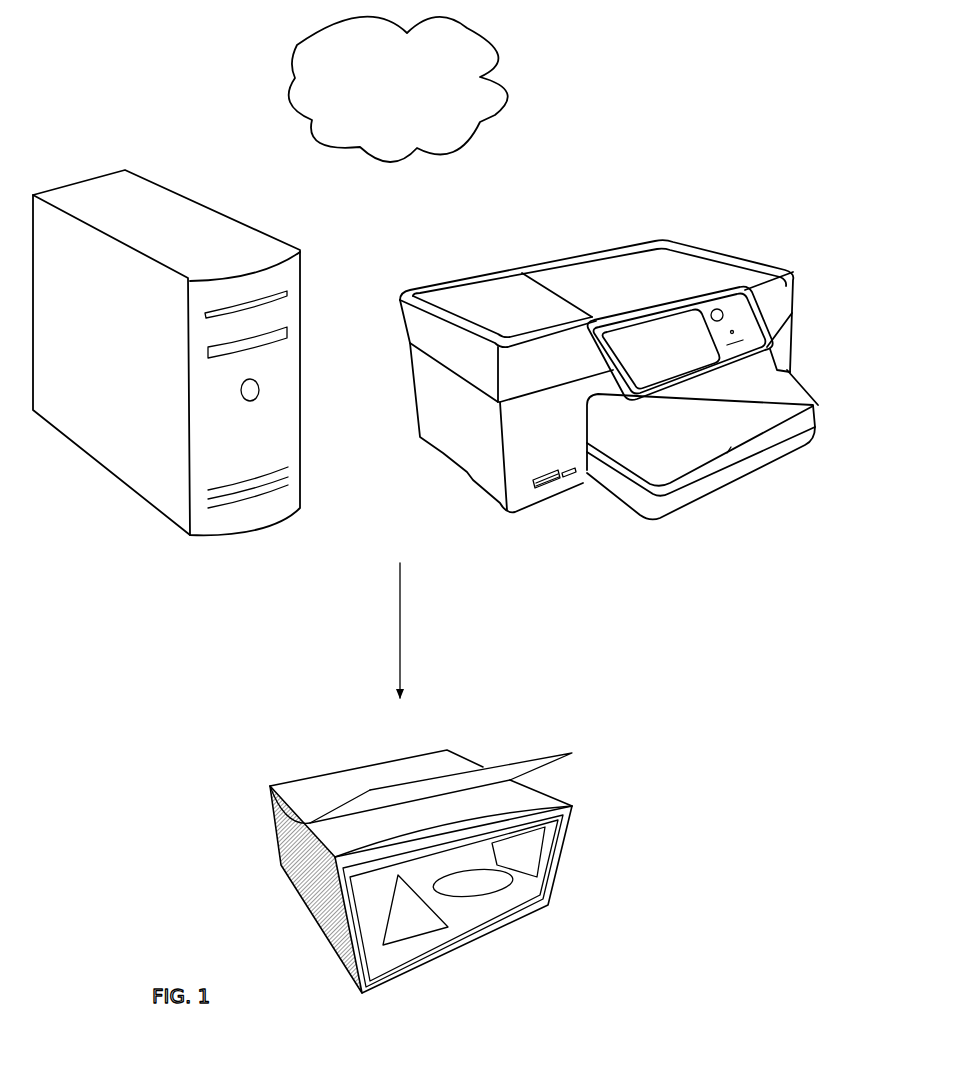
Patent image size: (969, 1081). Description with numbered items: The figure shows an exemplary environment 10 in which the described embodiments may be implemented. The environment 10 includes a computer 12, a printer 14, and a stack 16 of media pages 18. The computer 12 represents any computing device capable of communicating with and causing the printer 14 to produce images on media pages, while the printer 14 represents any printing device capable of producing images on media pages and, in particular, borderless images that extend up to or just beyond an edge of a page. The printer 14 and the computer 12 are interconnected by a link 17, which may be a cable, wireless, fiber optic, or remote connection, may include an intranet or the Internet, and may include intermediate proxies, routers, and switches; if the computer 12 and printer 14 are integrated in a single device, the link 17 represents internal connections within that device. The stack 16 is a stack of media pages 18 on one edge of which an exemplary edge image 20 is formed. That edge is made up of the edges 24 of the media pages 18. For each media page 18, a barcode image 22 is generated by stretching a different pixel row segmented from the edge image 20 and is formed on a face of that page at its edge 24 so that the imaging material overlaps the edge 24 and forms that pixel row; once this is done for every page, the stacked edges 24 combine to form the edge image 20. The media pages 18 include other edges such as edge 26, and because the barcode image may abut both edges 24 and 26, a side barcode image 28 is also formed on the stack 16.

The environment 10 is at (99, 48).
The computer 12 is at (208, 233).
The printer 14 is at (637, 267).
The stack 16 is at (500, 683).
The link 17 is at (465, 28).
The media pages 18 is at (268, 788).
The edge image 20 is at (535, 888).
The barcode image 22 is at (527, 808).
The edge 24 is at (497, 762).
The edge 26 is at (358, 800).
The side barcode image 28 is at (348, 946).